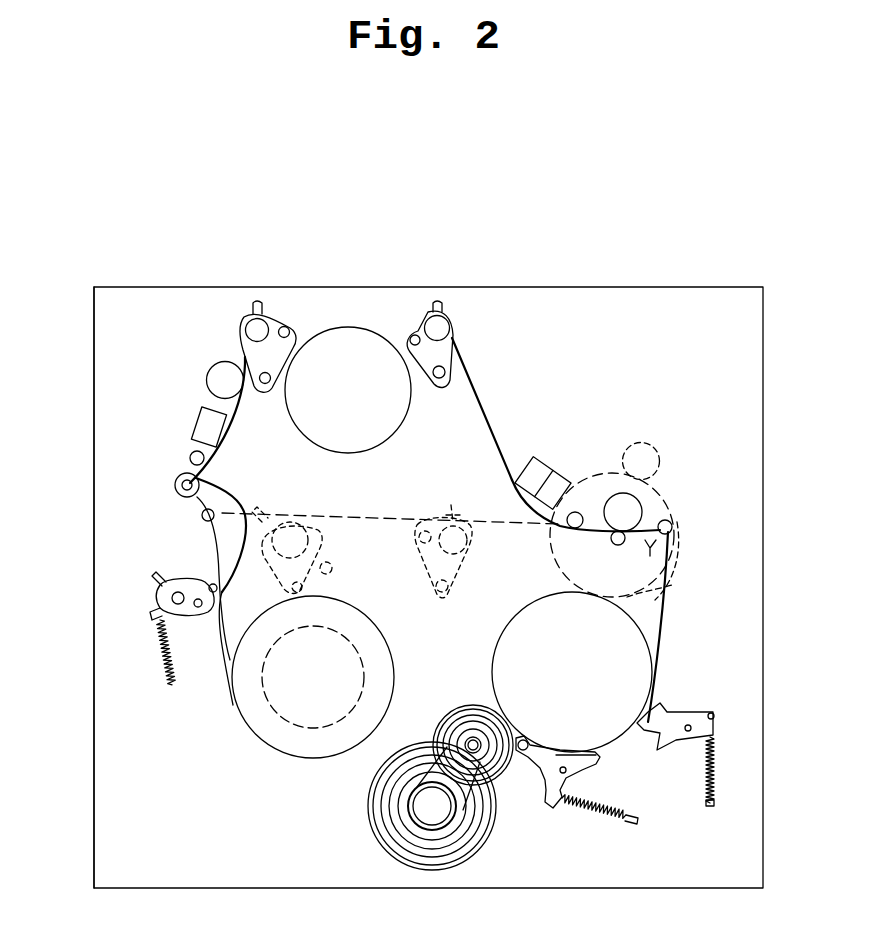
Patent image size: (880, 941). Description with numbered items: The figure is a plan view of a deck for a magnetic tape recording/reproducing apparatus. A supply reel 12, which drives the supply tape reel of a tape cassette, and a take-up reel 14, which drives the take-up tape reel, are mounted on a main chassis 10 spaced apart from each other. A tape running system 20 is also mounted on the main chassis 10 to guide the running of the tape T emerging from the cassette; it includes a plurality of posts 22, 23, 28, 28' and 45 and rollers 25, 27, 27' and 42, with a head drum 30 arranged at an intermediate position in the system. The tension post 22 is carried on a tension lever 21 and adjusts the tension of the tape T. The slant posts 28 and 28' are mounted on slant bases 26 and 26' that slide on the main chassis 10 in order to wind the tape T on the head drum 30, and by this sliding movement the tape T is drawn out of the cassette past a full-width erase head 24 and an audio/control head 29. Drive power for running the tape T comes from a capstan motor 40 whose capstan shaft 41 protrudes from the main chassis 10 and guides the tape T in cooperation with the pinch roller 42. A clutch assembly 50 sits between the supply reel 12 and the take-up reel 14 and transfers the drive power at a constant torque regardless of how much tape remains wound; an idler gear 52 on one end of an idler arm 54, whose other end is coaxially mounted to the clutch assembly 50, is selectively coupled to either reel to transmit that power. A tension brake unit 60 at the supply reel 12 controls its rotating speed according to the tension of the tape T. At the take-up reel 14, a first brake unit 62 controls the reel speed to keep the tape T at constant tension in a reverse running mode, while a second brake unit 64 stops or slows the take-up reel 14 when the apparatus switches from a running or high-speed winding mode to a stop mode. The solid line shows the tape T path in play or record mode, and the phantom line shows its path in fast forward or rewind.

The main chassis 10 is at (160, 800).
The supply reel 12 is at (226, 650).
The take-up reel 14 is at (625, 638).
The tape running system 20 is at (331, 276).
The tension lever 21 is at (202, 517).
The tension post 22 is at (176, 490).
The post 23 is at (189, 460).
The full-width erase head 24 is at (203, 427).
The roller 25 is at (215, 378).
The slant base 26 is at (236, 327).
The roller 27 is at (244, 287).
The slant post 28 is at (284, 313).
The slant base 26' is at (482, 315).
The roller 27' is at (467, 295).
The slant post 28' is at (444, 307).
The audio/control head 29 is at (560, 450).
The head drum 30 is at (383, 348).
The capstan motor 40 is at (652, 598).
The capstan shaft 41 is at (682, 556).
The roller 42 is at (660, 478).
The post 45 is at (662, 526).
The clutch assembly 50 is at (432, 870).
The idler gear 52 is at (540, 772).
The idler arm 54 is at (470, 775).
The tension brake unit 60 is at (230, 692).
The first brake unit 62 is at (548, 768).
The second brake unit 64 is at (690, 712).
The tape T is at (205, 527).